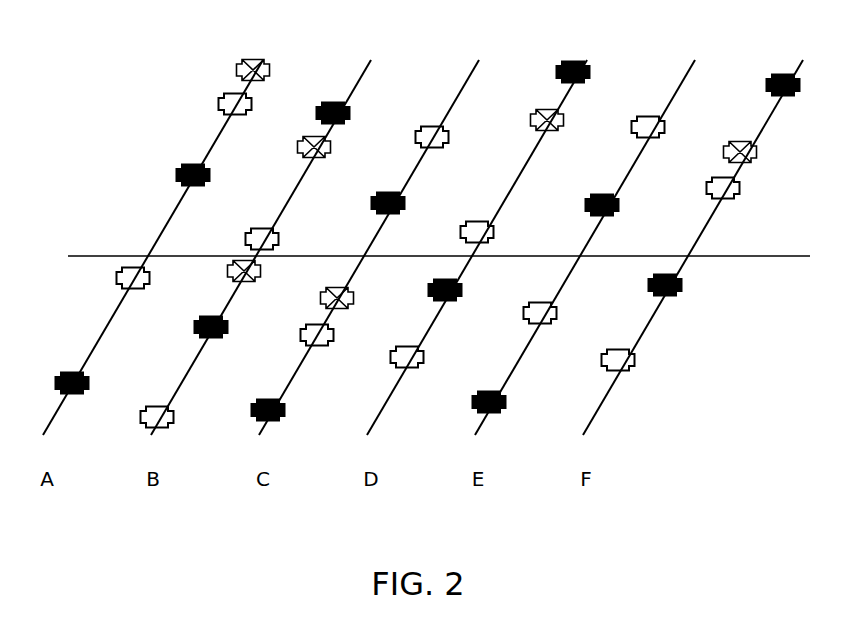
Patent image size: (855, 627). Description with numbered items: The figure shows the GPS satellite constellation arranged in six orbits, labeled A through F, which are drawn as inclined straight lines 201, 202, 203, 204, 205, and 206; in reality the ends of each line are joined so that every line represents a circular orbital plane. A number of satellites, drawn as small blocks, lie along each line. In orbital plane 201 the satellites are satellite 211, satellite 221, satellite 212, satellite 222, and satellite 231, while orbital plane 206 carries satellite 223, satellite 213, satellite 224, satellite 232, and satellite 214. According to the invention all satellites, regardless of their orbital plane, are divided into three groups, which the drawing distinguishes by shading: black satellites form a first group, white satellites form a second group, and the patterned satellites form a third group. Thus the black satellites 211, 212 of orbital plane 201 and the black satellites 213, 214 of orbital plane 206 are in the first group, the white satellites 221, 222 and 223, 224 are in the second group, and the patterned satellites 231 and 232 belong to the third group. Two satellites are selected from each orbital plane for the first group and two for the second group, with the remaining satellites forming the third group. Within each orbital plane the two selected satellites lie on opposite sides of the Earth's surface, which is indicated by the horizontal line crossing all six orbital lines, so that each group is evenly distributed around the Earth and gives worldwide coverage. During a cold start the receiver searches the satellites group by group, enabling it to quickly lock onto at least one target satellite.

The orbital plane 201 is at (164, 230).
The orbital plane 202 is at (267, 230).
The orbital plane 203 is at (376, 230).
The orbital plane 204 is at (487, 230).
The orbital plane 205 is at (594, 230).
The orbital plane 206 is at (704, 230).
The satellite 211 is at (52, 383).
The satellite 212 is at (172, 175).
The satellite 213 is at (687, 285).
The satellite 214 is at (805, 85).
The satellite 221 is at (114, 278).
The satellite 222 is at (215, 104).
The satellite 223 is at (640, 360).
The satellite 224 is at (744, 188).
The satellite 231 is at (234, 70).
The satellite 232 is at (762, 152).